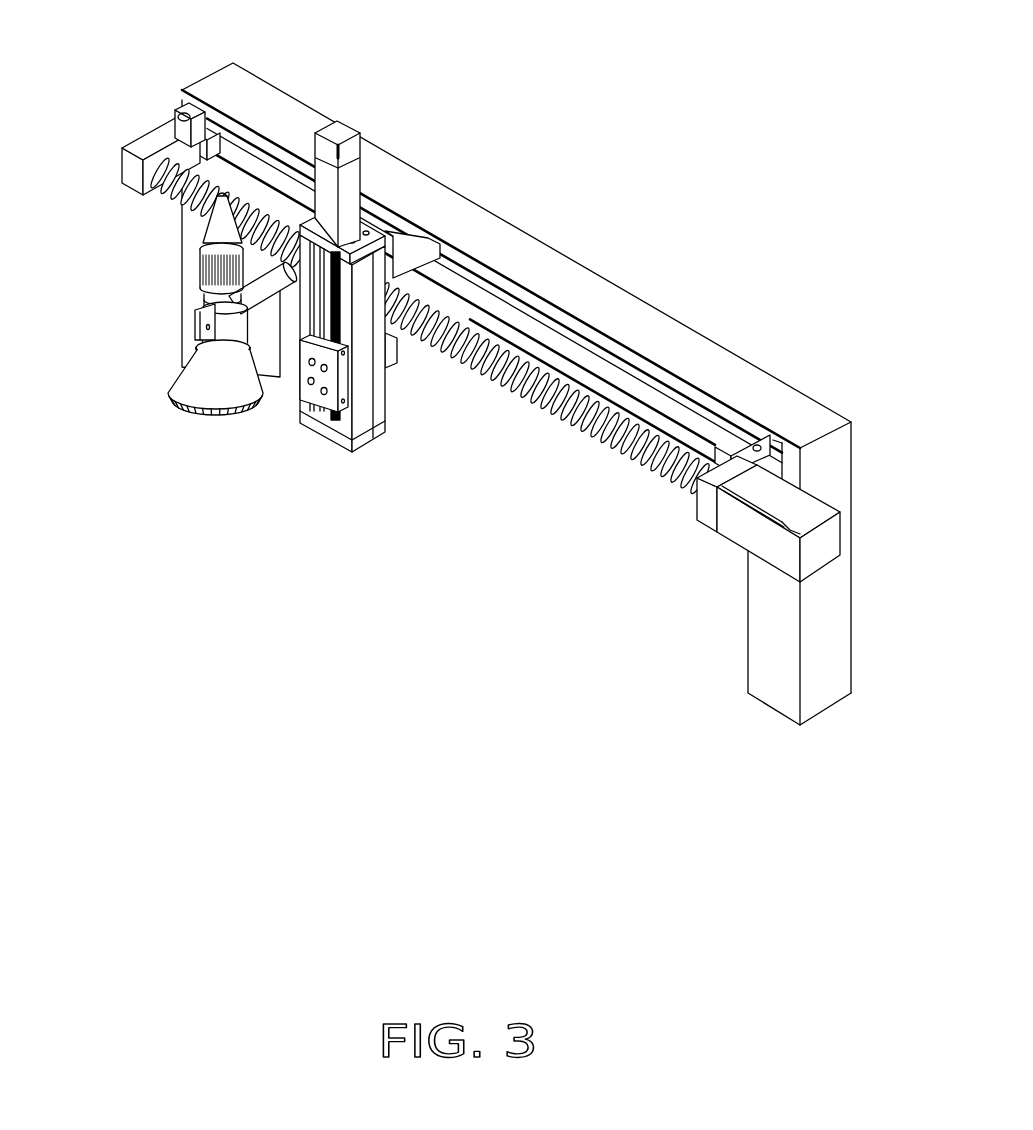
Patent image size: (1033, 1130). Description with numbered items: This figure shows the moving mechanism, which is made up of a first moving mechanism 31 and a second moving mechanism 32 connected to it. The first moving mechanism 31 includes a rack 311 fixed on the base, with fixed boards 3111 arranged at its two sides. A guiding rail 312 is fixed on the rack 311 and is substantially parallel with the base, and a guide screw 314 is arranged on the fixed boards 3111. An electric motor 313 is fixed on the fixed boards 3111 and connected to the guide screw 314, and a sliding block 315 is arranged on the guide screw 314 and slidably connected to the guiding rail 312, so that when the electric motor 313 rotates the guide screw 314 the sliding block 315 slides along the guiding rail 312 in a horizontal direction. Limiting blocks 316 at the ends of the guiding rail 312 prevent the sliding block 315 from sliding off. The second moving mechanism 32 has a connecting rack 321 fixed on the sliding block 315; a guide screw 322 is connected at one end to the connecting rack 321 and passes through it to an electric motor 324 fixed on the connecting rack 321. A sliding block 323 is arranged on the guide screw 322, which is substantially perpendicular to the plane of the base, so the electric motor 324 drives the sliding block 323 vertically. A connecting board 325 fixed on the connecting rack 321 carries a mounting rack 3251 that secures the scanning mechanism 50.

The first moving mechanism 31 is at (484, 370).
The rack 311 is at (522, 252).
The fixed boards 3111 is at (147, 147).
The guiding rail 312 is at (535, 333).
The electric motor 313 is at (832, 540).
The guide screw 314 is at (655, 467).
The sliding block 315 is at (408, 253).
The limiting blocks 316 is at (197, 140).
The second moving mechanism 32 is at (353, 303).
The connecting rack 321 is at (370, 437).
The guide screw 322 is at (335, 325).
The sliding block 323 is at (305, 378).
The electric motor 324 is at (340, 128).
The connecting board 325 is at (194, 274).
The mounting rack 3251 is at (223, 325).
The scanning mechanism 50 is at (210, 375).